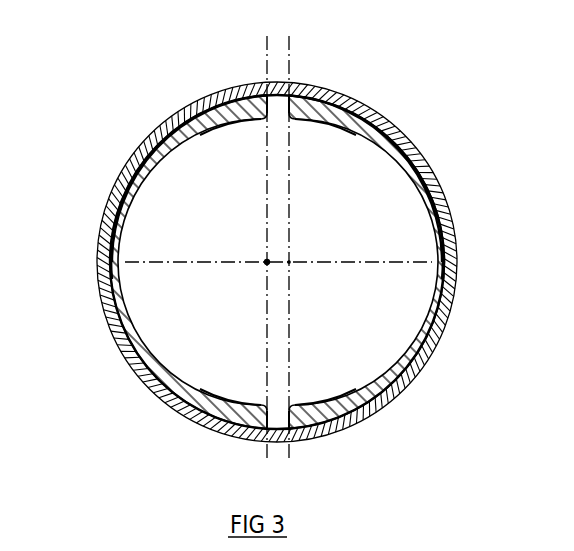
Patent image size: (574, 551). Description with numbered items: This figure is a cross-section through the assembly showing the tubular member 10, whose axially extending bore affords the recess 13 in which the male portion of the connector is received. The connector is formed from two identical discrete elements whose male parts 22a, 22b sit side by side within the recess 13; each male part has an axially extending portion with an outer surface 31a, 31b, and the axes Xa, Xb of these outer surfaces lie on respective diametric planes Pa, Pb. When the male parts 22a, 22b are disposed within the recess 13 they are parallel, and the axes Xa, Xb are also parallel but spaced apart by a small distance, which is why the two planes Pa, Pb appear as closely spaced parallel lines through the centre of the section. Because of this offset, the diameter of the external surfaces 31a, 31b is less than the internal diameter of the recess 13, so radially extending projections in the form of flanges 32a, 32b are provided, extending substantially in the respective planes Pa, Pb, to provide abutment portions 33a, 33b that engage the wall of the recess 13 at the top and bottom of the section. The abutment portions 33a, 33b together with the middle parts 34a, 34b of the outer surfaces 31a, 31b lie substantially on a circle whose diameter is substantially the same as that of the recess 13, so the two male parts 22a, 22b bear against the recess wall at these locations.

The member 10 is at (452, 212).
The recess 13 is at (378, 130).
The male part 22a is at (123, 340).
The male part 22b is at (424, 362).
The outer surface 31a is at (207, 103).
The outer surface 31b is at (353, 103).
The flange 32a is at (255, 402).
The flange 32b is at (300, 122).
The abutment portion 33a is at (243, 486).
The abutment portion 33b is at (292, 92).
The middle part 34a is at (112, 262).
The middle part 34b is at (440, 262).
The diametric plane Pa is at (271, 23).
The diametric plane Pb is at (306, 23).
The axis Xa is at (258, 258).
The axis Xb is at (314, 258).